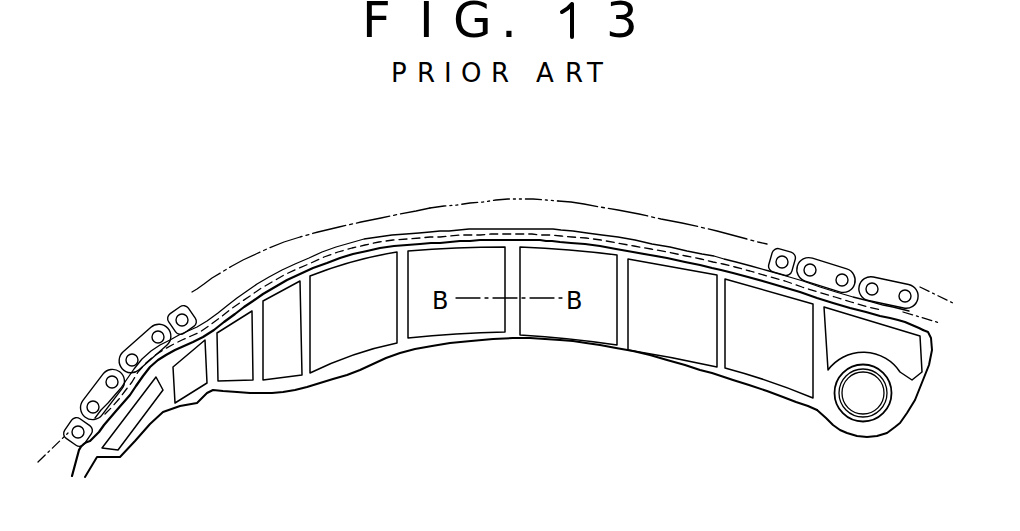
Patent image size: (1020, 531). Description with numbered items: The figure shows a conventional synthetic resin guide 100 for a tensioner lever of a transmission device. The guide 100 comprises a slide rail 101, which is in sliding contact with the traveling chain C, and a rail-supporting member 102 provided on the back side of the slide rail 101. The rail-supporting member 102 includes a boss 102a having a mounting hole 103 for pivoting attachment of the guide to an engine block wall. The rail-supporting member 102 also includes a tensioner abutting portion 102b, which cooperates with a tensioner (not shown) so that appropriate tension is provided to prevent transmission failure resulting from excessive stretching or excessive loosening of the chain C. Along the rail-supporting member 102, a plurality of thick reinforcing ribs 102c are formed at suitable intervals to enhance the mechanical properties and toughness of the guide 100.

The synthetic resin guide 100 is at (502, 324).
The slide rail 101 is at (663, 259).
The rail-supporting member 102 is at (781, 365).
The boss 102a is at (905, 409).
The tensioner abutting portion 102b is at (280, 394).
The reinforcing ribs 102c is at (521, 272).
The mounting hole 103 is at (848, 402).
The chain C is at (141, 341).